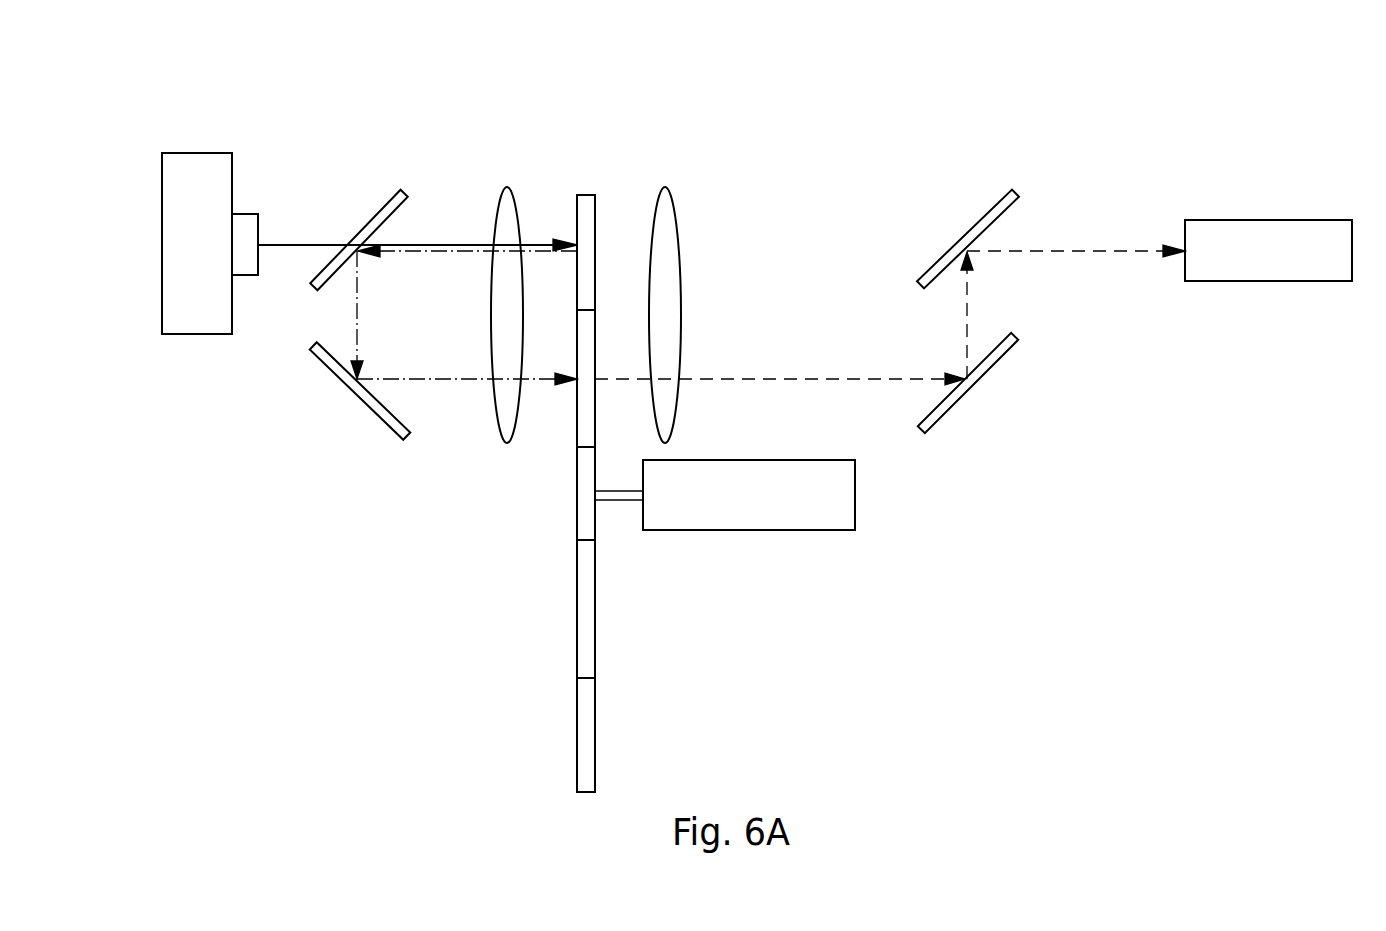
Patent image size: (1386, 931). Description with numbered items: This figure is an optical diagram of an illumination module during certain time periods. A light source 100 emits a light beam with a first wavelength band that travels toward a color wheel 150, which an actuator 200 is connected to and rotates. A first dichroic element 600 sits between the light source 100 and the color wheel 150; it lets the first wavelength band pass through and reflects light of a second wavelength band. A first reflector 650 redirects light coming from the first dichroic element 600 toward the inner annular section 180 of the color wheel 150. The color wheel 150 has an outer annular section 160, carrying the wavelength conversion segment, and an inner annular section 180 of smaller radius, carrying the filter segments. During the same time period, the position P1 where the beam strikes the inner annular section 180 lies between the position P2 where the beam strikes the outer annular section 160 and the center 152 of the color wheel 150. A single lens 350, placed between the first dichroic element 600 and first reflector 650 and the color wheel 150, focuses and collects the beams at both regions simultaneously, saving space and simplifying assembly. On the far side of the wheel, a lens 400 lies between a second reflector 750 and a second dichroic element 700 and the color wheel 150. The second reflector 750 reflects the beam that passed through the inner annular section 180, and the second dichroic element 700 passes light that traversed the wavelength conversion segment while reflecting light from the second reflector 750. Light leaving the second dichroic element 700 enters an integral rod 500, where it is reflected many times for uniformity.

The light source 100 is at (195, 175).
The first dichroic element 600 is at (402, 192).
The first reflector 650 is at (373, 403).
The lens 350 is at (510, 198).
The lens 400 is at (670, 198).
The color wheel 150 is at (590, 630).
The outer annular section 160 is at (590, 200).
The inner annular section 180 is at (575, 410).
The center 152 is at (571, 507).
The position P1 is at (566, 368).
The position P2 is at (566, 234).
The actuator 200 is at (845, 502).
The second dichroic element 700 is at (1013, 195).
The second reflector 750 is at (996, 372).
The integral rod 500 is at (1258, 247).